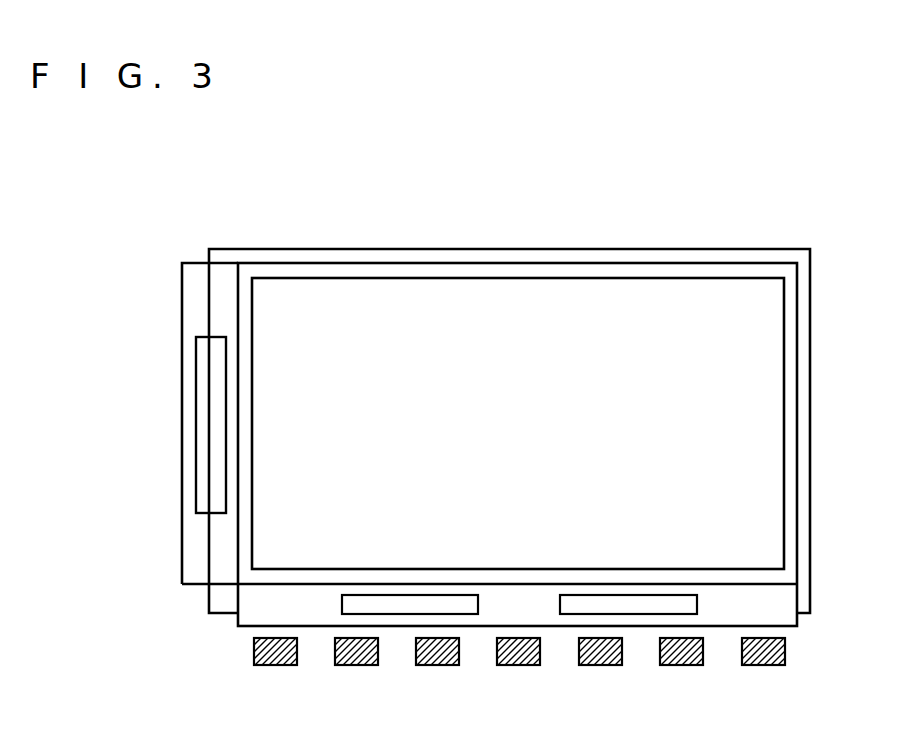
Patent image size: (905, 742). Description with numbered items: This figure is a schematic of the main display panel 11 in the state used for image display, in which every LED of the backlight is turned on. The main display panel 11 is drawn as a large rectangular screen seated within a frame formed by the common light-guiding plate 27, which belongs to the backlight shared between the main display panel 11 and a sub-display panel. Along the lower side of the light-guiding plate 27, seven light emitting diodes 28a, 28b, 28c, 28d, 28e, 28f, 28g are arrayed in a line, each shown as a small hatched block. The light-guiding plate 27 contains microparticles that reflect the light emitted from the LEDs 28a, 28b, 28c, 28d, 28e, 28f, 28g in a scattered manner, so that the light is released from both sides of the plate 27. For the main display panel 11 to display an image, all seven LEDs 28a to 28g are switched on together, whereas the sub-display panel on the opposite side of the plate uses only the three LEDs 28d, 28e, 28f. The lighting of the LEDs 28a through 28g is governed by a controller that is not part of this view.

The main display panel 11 is at (643, 293).
The light-guiding plate 27 is at (811, 405).
The LED 28a is at (267, 666).
The LED 28b is at (348, 666).
The LED 28c is at (429, 666).
The LED 28d is at (510, 666).
The LED 28e is at (592, 666).
The LED 28f is at (673, 666).
The LED 28g is at (755, 666).